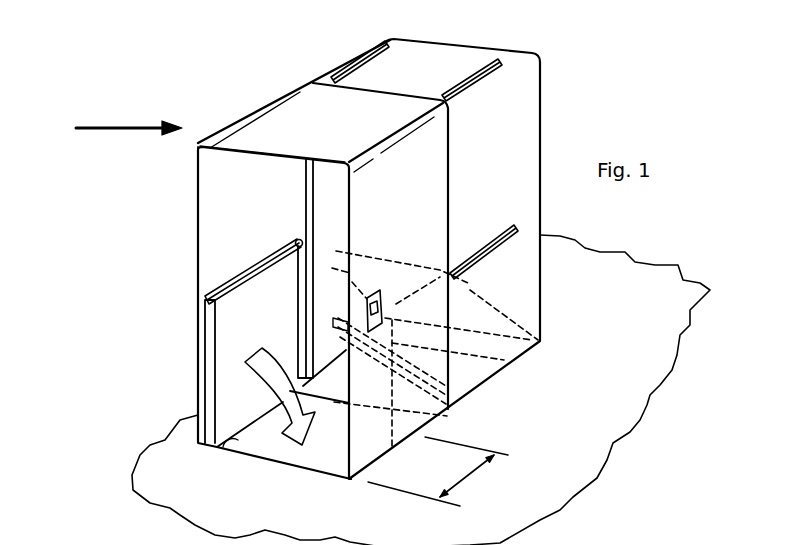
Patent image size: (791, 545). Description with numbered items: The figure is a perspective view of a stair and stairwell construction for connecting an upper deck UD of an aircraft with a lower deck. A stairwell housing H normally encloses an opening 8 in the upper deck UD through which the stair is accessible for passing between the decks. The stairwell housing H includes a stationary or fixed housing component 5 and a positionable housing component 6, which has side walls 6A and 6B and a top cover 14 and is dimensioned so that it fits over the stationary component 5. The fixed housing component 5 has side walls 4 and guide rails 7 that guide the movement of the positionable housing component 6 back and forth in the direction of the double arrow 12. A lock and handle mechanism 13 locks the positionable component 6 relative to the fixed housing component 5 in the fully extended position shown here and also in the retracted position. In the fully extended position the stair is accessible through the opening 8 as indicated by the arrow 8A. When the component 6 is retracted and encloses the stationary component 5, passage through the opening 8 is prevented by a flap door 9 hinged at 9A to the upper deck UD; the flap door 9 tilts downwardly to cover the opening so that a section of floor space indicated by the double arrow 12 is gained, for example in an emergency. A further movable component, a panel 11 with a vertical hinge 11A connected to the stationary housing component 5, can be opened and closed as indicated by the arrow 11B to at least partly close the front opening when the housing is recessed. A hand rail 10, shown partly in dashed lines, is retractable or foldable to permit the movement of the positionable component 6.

The side walls 4 is at (537, 78).
The fixed housing component 5 is at (427, 53).
The positionable housing component 6 is at (258, 104).
The side wall 6A is at (205, 175).
The side wall 6B is at (402, 198).
The guide rails 7 is at (367, 58).
The opening 8 is at (310, 455).
The arrow 8A is at (270, 367).
The flap door 9 is at (223, 340).
The hinge 9A is at (236, 448).
The hand rail 10 is at (427, 378).
The panel 11 is at (240, 272).
The vertical hinge 11A is at (298, 242).
The arrow 11B is at (302, 214).
The double arrow 12 is at (463, 480).
The lock and handle mechanism 13 is at (385, 297).
The top cover 14 is at (300, 107).
The stairwell housing H is at (114, 128).
The upper deck UD is at (670, 367).